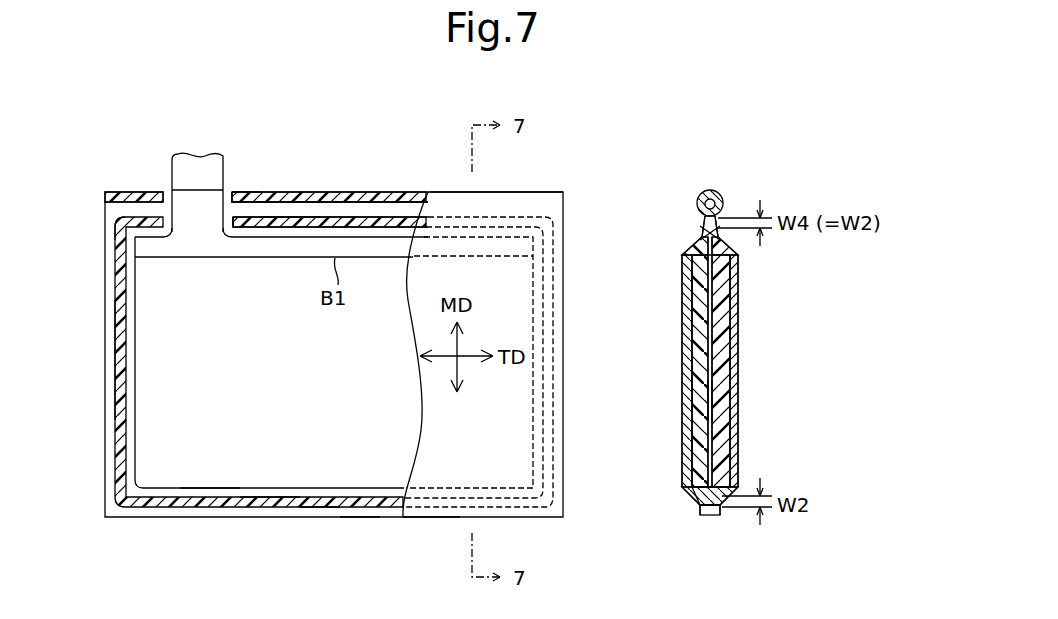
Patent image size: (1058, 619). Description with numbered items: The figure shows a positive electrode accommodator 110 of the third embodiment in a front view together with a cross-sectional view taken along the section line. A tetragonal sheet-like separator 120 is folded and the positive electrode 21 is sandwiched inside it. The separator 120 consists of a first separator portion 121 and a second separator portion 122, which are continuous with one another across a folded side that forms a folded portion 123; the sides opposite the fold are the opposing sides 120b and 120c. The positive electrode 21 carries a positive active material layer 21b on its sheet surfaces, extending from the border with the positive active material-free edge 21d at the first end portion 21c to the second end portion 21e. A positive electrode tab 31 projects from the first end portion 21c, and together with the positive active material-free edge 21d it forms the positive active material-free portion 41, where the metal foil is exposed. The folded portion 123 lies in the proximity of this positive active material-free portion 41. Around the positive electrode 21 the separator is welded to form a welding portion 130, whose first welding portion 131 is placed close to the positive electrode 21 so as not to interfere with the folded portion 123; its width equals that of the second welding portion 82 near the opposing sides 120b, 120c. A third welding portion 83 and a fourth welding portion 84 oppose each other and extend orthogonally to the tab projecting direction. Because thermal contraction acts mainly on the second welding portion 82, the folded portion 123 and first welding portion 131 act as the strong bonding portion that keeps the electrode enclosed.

The positive electrode accommodator 110 is at (550, 133).
The separator 120 is at (540, 195).
The first separator portion 121 is at (492, 201).
The second separator portion 122 is at (408, 208).
The folded portion 123 is at (373, 200).
The opposing side 120b is at (427, 517).
The opposing side 120c is at (353, 519).
The welding portion 130 is at (138, 213).
The first welding portion 131 is at (330, 222).
The positive electrode 21 is at (157, 490).
The positive active material layer 21b is at (207, 477).
The first end portion 21c is at (290, 238).
The positive active material-free edge 21d is at (253, 250).
The second end portion 21e is at (250, 490).
The positive electrode tab 31 is at (192, 162).
The positive active material-free portion 41 is at (268, 118).
The second welding portion 82 is at (307, 505).
The third welding portion 83 is at (120, 422).
The fourth welding portion 84 is at (556, 440).